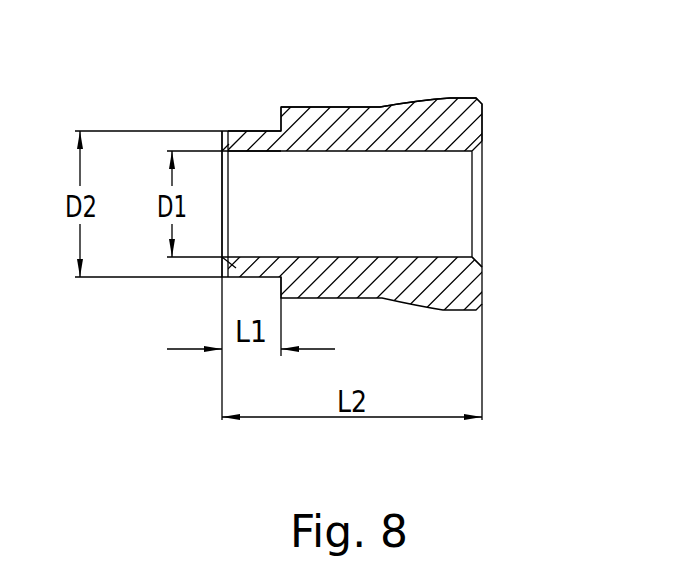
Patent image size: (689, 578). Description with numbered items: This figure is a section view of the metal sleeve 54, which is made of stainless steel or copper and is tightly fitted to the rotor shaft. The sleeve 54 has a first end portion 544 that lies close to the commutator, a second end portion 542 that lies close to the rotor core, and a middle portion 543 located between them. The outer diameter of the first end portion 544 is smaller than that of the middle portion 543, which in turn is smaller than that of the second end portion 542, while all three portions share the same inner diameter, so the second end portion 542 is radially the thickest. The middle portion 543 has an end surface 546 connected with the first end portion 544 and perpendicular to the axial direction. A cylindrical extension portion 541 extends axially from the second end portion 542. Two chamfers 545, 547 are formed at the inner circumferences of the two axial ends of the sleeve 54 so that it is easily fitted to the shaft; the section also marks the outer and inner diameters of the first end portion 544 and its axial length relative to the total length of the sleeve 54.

The sleeve 54 is at (482, 202).
The cylindrical extension portion 541 is at (467, 102).
The second end portion 542 is at (407, 120).
The middle portion 543 is at (318, 127).
The first end portion 544 is at (240, 134).
The chamfer 545 is at (478, 259).
The end surface 546 is at (280, 128).
The chamfer 547 is at (225, 131).